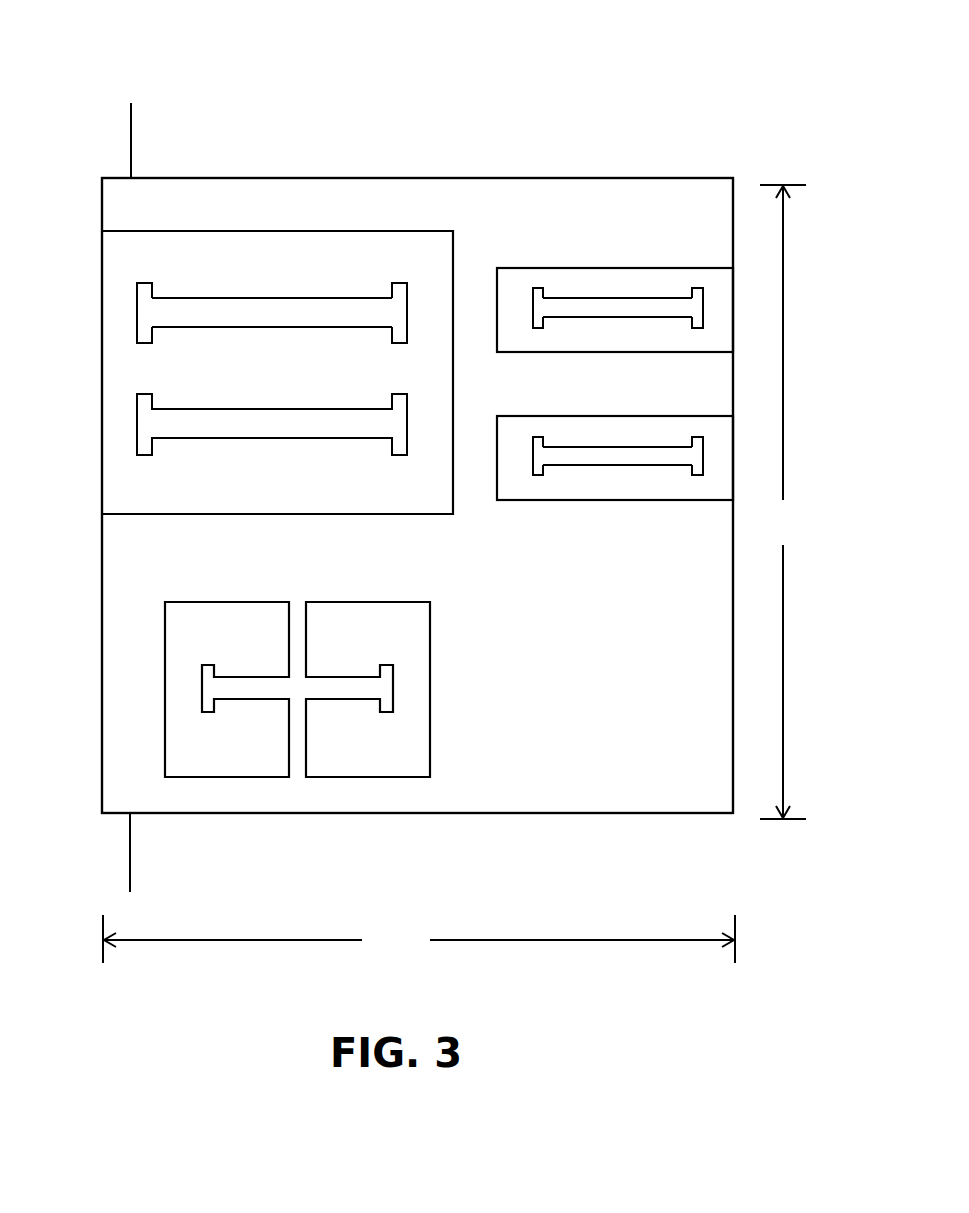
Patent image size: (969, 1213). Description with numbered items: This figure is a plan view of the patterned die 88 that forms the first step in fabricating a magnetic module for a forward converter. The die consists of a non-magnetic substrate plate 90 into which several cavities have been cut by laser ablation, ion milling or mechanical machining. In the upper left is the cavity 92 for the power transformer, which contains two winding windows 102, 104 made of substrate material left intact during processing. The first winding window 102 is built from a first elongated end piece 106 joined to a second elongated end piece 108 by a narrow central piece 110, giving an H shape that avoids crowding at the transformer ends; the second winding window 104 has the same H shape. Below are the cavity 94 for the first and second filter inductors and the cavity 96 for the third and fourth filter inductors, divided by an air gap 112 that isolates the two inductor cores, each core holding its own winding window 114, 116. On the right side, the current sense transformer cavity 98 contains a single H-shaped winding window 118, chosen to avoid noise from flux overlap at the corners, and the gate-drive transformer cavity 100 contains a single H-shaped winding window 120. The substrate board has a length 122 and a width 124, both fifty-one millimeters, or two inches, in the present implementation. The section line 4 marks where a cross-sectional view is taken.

The patterned die 88 is at (723, 93).
The non-magnetic substrate plate 90 is at (607, 707).
The power transformer cavity 92 is at (128, 366).
The first inductor cavity 94 is at (208, 664).
The third inductor cavity 96 is at (397, 667).
The current sense transformer cavity 98 is at (615, 299).
The gate-drive transformer cavity 100 is at (615, 470).
The first winding window 102 is at (293, 302).
The second winding window 104 is at (270, 408).
The first elongated end piece 106 is at (147, 291).
The second elongated end piece 108 is at (401, 290).
The narrow central piece 110 is at (283, 315).
The air gap 112 is at (298, 637).
The winding window 114 is at (258, 690).
The winding window 116 is at (326, 690).
The winding window 118 is at (619, 318).
The winding window 120 is at (598, 446).
The length 122 is at (790, 502).
The width 124 is at (419, 939).
The section line 4- 4 is at (147, 142).